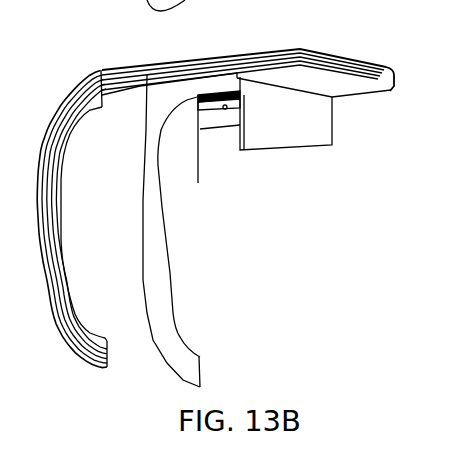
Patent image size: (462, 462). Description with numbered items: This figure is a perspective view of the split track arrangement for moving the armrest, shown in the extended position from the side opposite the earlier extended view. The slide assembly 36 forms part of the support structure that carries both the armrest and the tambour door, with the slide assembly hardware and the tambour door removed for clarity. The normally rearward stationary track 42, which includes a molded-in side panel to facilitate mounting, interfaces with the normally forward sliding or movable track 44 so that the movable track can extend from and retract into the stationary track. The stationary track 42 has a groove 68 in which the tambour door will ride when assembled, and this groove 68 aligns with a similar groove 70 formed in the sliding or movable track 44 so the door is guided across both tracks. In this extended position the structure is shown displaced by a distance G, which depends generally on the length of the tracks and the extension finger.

The slide assembly 36 is at (274, 251).
The stationary track 42 is at (60, 266).
The sliding or movable track 44 is at (2, 87).
The groove 68 is at (160, 67).
The groove 70 is at (248, 56).
The distance G is at (273, 166).